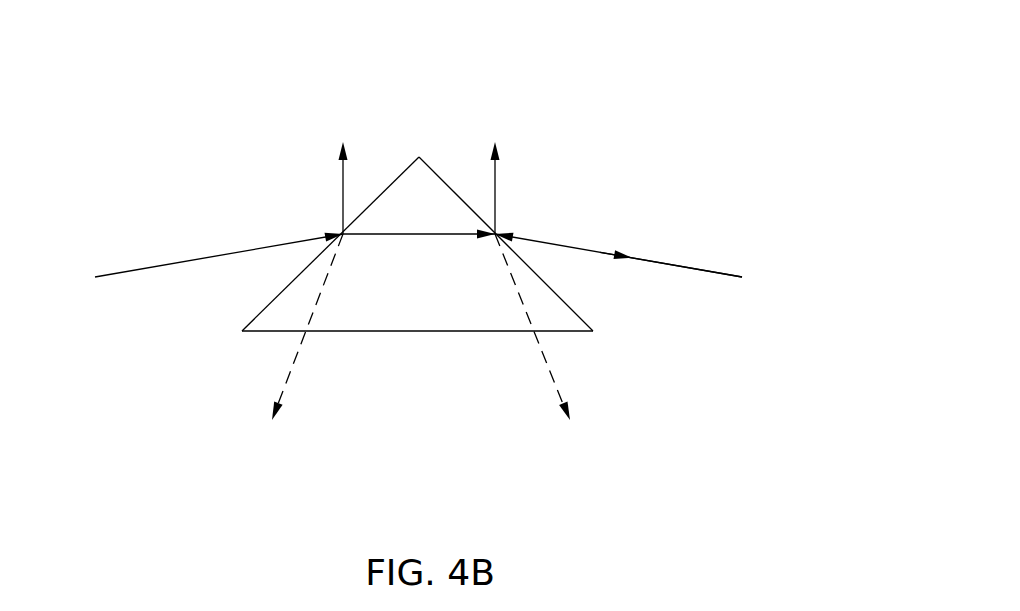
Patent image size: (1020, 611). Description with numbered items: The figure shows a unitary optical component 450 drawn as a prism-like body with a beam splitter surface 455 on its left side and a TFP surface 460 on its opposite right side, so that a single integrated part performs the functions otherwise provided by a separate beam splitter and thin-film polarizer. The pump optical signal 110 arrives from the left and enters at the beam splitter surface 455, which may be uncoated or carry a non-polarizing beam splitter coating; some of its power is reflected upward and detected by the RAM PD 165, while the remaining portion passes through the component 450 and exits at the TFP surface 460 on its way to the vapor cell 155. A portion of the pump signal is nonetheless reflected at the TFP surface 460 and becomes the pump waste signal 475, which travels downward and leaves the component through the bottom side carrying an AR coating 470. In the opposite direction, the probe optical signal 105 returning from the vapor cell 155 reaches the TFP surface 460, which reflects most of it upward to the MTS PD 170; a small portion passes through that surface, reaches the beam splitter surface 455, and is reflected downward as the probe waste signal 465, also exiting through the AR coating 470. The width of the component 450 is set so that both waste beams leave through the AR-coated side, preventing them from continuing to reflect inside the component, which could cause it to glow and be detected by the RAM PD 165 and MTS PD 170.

The probe optical signal 105 is at (568, 242).
The pump optical signal 110 is at (157, 262).
The vapor cell 155 is at (703, 242).
The RAM PD 165 is at (338, 161).
The MTS PD 170 is at (495, 161).
The optical component 450 is at (458, 257).
The beam splitter surface 455 is at (280, 289).
The TFP surface 460 is at (552, 285).
The probe waste signal 465 is at (286, 381).
The AR coating 470 is at (430, 332).
The pump waste signal 475 is at (555, 381).